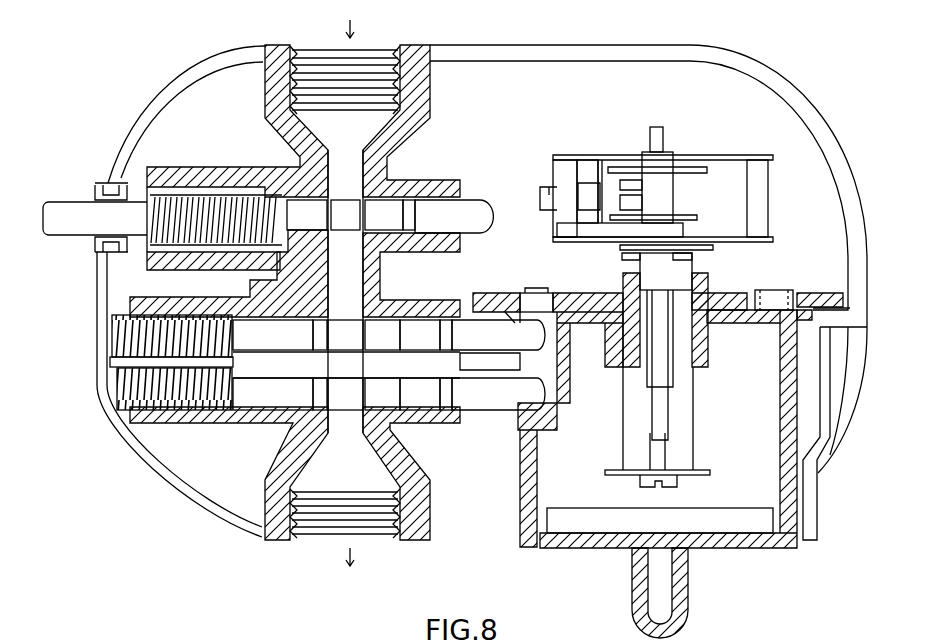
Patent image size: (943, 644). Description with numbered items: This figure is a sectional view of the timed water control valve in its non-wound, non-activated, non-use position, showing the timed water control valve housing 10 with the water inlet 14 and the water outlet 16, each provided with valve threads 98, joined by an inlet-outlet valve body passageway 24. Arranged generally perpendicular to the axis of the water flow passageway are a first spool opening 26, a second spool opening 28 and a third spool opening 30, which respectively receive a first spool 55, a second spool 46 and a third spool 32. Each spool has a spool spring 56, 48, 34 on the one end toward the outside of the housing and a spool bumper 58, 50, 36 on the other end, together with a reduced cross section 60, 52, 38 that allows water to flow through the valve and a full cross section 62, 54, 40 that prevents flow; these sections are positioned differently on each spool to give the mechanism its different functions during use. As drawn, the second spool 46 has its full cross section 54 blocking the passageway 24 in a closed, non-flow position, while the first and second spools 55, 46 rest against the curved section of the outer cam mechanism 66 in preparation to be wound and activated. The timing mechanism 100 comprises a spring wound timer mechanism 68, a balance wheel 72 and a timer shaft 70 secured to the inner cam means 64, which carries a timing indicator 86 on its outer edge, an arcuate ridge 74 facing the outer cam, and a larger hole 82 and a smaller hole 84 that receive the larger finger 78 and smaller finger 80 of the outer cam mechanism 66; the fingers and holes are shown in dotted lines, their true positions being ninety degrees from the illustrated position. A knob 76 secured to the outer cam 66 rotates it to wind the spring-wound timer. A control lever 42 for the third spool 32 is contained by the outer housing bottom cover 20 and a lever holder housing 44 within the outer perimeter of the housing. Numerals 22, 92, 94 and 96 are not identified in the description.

The timed water control valve housing 10 is at (146, 122).
The water inlet 14 is at (362, 31).
The water outlet 16 is at (362, 560).
The outer housing bottom cover 20 is at (509, 96).
The hermetic shell 22 is at (482, 282).
The inlet-outlet valve body passageway 24 is at (360, 174).
The first spool opening 26 is at (130, 415).
The second spool opening 28 is at (110, 362).
The third spool opening 30 is at (128, 180).
The third spool 32 is at (100, 229).
The spool spring 34 is at (150, 248).
The spool bumper 36 is at (478, 212).
The reduced cross section 38 is at (345, 215).
The full cross section 40 is at (320, 226).
The control lever 42 is at (95, 240).
The lever holder housing 44 is at (95, 192).
The second spool 46 is at (282, 347).
The spool spring 48 is at (112, 338).
The spool bumper 50 is at (550, 337).
The reduced cross section 52 is at (396, 347).
The full cross section 54 is at (359, 347).
The first spool 55 is at (282, 404).
The spool spring 56 is at (120, 385).
The spool bumper 58 is at (550, 384).
The reduced cross section 60 is at (359, 404).
The full cross section 62 is at (396, 404).
The inner cam means 64 is at (578, 293).
The outer cam mechanism 66 is at (803, 485).
The spring wound timer mechanism 68 is at (678, 184).
The timer shaft 70 is at (679, 280).
The balance wheel 72 is at (538, 190).
The arcuate ridge 74 is at (826, 290).
The knob 76 is at (632, 584).
The larger finger 78 is at (775, 292).
The smaller finger 80 is at (536, 289).
The larger hole 82 is at (748, 300).
The smaller hole 84 is at (522, 300).
The timing indicator 86 is at (850, 310).
The retainer clip 92 is at (675, 486).
The washer plate 94 is at (705, 474).
The shell liner 96 is at (846, 333).
The valve threads 98 is at (318, 50).
The timing mechanism 100 is at (603, 145).